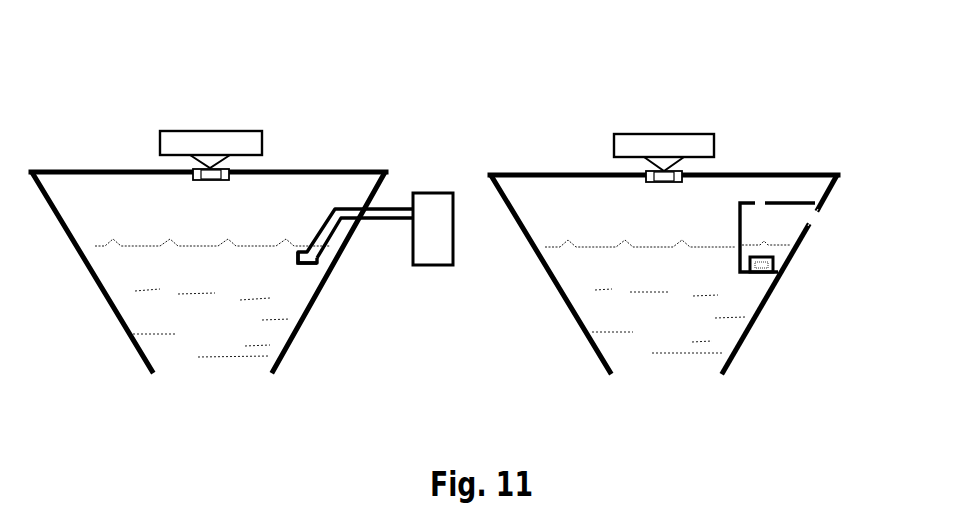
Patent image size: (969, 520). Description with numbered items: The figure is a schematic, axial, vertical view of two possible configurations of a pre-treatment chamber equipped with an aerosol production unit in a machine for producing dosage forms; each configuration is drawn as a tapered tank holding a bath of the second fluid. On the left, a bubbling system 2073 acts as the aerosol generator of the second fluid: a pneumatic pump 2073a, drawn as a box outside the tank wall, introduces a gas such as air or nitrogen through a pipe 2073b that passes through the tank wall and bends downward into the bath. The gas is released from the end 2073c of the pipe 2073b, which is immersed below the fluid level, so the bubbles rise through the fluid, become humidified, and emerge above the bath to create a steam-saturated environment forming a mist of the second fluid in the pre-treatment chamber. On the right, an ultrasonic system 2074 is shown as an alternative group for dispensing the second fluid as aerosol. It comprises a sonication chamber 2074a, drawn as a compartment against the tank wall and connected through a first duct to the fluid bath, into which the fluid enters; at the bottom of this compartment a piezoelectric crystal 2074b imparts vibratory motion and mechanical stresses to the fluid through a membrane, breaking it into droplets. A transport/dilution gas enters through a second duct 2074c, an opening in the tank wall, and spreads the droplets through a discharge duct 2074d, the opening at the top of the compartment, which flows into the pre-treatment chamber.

The bubbling system 2073 is at (449, 119).
The pneumatic pump 2073a is at (441, 280).
The pipe 2073b is at (341, 200).
The end of the pipe 2073c is at (305, 272).
The ultrasonic system 2074 is at (822, 145).
The sonication chamber 2074a is at (718, 258).
The piezoelectric crystal 2074b is at (755, 281).
The second duct 2074c is at (820, 221).
The discharge duct 2074d is at (758, 200).